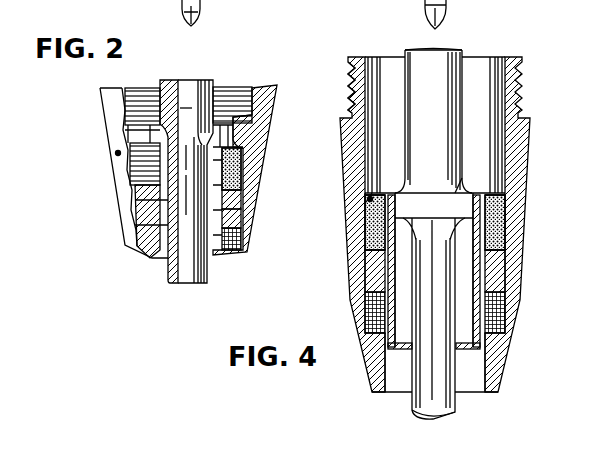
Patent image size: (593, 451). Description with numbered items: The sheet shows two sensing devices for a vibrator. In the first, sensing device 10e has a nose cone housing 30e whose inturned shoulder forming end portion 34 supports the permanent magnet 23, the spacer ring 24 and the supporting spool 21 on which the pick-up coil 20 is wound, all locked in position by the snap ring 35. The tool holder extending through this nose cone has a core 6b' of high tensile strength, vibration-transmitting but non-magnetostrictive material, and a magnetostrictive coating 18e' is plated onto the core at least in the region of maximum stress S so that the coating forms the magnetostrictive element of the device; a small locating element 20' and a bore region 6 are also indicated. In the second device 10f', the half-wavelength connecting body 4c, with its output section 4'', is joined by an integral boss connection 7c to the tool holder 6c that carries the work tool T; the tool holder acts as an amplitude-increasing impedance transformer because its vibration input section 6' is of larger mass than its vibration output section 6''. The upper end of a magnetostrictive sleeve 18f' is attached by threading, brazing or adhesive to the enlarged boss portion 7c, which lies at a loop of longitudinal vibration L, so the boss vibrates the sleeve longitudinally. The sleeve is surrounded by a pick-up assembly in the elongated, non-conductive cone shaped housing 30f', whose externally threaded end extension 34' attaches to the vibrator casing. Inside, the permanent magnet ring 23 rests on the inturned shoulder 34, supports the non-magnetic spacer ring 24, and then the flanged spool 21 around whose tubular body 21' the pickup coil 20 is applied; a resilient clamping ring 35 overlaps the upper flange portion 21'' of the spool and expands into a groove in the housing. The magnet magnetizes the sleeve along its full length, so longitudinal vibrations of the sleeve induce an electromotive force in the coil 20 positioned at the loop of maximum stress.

In FIG. 2, the work tool T is at (181, 13).
In FIG. 4, the work tool T is at (425, 14).
In FIG. 2, the sensing device 10e is at (256, 72).
In FIG. 2, the magnetostrictive coating 18e' is at (148, 95).
In FIG. 2, the core 6b' is at (186, 165).
In FIG. 2, the externally threaded end extension 34' is at (256, 105).
In FIG. 4, the externally threaded end extension 34' is at (449, 77).
In FIG. 2, the nose cone housing 30e is at (106, 120).
In FIG. 2, the snap ring 35 is at (240, 140).
In FIG. 4, the snap ring 35 is at (372, 192).
In FIG. 2, the supporting spool 21 is at (260, 169).
In FIG. 4, the supporting spool 21 is at (435, 212).
In FIG. 2, the tubular body 21' is at (261, 166).
In FIG. 4, the tubular body 21' is at (461, 222).
In FIG. 2, the upper flange portion 21'' is at (266, 167).
In FIG. 4, the upper flange portion 21'' is at (459, 255).
In FIG. 2, the pick-up coil 20 is at (193, 164).
In FIG. 4, the pick-up coil 20 is at (447, 212).
In FIG. 2, the lock element 20' is at (85, 153).
In FIG. 4, the lock element 20' is at (347, 196).
In FIG. 2, the spacer ring 24 is at (242, 212).
In FIG. 4, the spacer ring 24 is at (372, 270).
In FIG. 2, the permanent magnet ring 23 is at (242, 236).
In FIG. 4, the permanent magnet ring 23 is at (375, 310).
In FIG. 2, the inturned shoulder forming end portion 34 is at (245, 179).
In FIG. 4, the inturned shoulder forming end portion 34 is at (453, 363).
In FIG. 2, the bore 6 is at (186, 102).
In FIG. 2, the vibration output section 6'' is at (186, 195).
In FIG. 2, the region of maximum stress S is at (184, 157).
In FIG. 4, the connecting body 4c is at (414, 46).
In FIG. 4, the sensing device 10f' is at (435, 101).
In FIG. 4, the cone shaped housing 30f' is at (453, 224).
In FIG. 4, the output section 4'' is at (433, 121).
In FIG. 4, the boss connection 7c is at (462, 194).
In FIG. 4, the magnetostrictive sleeve 18f' is at (477, 272).
In FIG. 4, the loop of longitudinal vibration L is at (434, 270).
In FIG. 4, the vibration input section 6' is at (434, 318).
In FIG. 4, the tool holder 6c is at (460, 411).